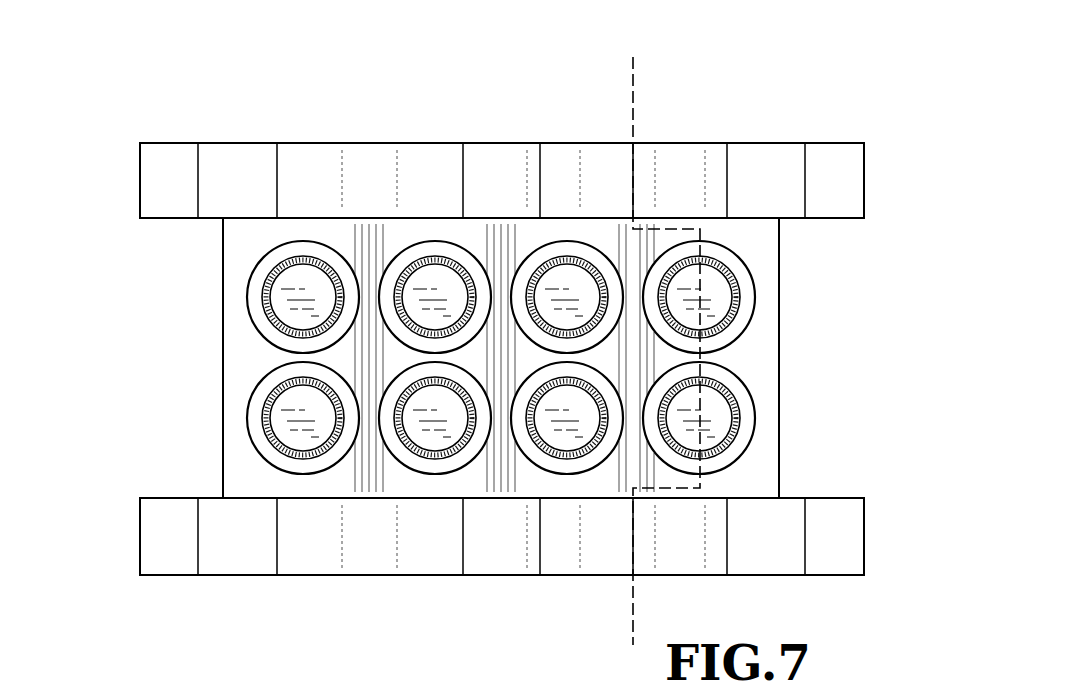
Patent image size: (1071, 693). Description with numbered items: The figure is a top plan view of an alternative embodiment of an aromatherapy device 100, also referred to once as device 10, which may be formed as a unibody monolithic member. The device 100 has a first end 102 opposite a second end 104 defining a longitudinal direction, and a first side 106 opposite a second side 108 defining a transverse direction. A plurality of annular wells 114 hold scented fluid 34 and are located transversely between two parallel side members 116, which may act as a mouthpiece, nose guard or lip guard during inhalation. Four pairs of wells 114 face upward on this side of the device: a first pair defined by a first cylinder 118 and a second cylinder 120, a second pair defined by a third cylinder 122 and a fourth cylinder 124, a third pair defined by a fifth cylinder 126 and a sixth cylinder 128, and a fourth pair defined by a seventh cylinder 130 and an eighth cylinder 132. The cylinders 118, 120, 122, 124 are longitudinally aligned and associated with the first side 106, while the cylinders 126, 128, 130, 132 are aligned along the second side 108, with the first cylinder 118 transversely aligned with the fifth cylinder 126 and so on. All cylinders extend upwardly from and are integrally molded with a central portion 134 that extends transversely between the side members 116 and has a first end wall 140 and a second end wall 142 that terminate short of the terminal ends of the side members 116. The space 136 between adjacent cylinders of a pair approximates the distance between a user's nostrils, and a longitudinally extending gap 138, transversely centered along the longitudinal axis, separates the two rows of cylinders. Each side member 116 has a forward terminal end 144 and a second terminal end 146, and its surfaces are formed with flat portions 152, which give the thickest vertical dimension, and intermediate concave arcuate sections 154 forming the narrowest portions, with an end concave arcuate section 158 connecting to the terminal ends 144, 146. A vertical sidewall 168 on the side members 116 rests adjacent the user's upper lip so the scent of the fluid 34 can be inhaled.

The device 10 is at (633, 57).
The fluid 34 is at (501, 357).
The aromatherapy device 100 is at (744, 54).
The first end 102 is at (93, 334).
The second end 104 is at (906, 336).
The first side 106 is at (467, 601).
The second side 108 is at (440, 124).
The annular wells 114 is at (265, 300).
The side members 116 is at (174, 146).
The first cylinder 118 is at (266, 466).
The second cylinder 120 is at (398, 466).
The third cylinder 122 is at (530, 466).
The fourth cylinder 124 is at (737, 466).
The fifth cylinder 126 is at (269, 249).
The sixth cylinder 128 is at (402, 249).
The seventh cylinder 130 is at (534, 249).
The eighth cylinder 132 is at (734, 249).
The central portion 134 is at (777, 409).
The space 136 is at (369, 273).
The longitudinally extending gap 138 is at (273, 354).
The first end wall 140 is at (223, 412).
The second end wall 142 is at (780, 252).
The forward terminal end 144 is at (140, 195).
The second terminal end 146 is at (865, 198).
The flat portions 152 is at (212, 148).
The arcuate sections 154 is at (355, 148).
The end concave arcuate section 158 is at (158, 165).
The vertical sidewall 168 is at (830, 143).